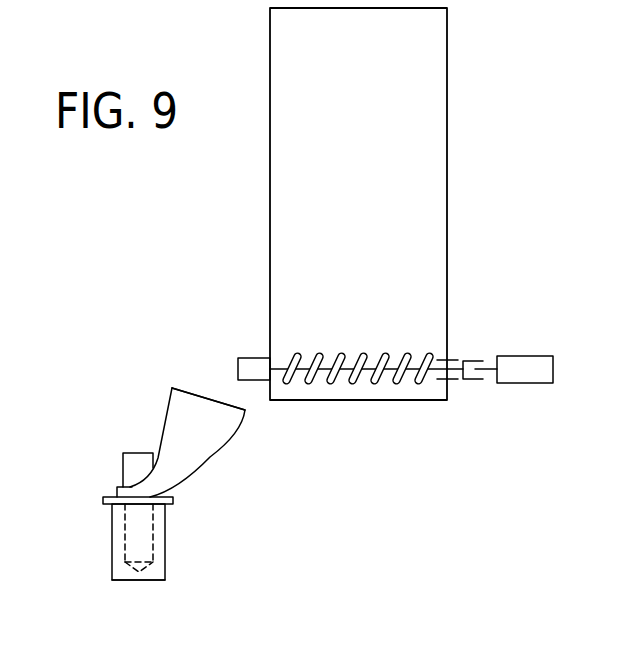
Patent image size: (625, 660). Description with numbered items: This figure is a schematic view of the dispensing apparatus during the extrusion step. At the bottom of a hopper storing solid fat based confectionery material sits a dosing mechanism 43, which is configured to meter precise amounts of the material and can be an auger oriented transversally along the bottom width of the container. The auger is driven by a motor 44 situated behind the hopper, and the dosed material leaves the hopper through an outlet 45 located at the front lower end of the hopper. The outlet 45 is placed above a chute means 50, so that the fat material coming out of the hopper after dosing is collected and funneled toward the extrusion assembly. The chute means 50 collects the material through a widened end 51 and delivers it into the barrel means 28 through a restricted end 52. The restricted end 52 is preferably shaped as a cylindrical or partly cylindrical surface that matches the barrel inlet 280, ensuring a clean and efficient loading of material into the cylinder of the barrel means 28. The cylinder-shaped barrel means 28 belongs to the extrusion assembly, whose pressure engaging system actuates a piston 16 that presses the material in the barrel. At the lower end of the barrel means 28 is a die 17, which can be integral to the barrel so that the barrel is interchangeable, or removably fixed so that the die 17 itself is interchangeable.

The piston 16 is at (131, 464).
The die 17 is at (152, 580).
The barrel means 28 is at (202, 561).
The barrel inlet 280 is at (140, 507).
The dosing mechanism 43 is at (378, 392).
The motor 44 is at (541, 356).
The outlet 45 is at (236, 367).
The chute means 50 is at (220, 455).
The widened end 51 is at (190, 387).
The restricted end 52 is at (115, 490).